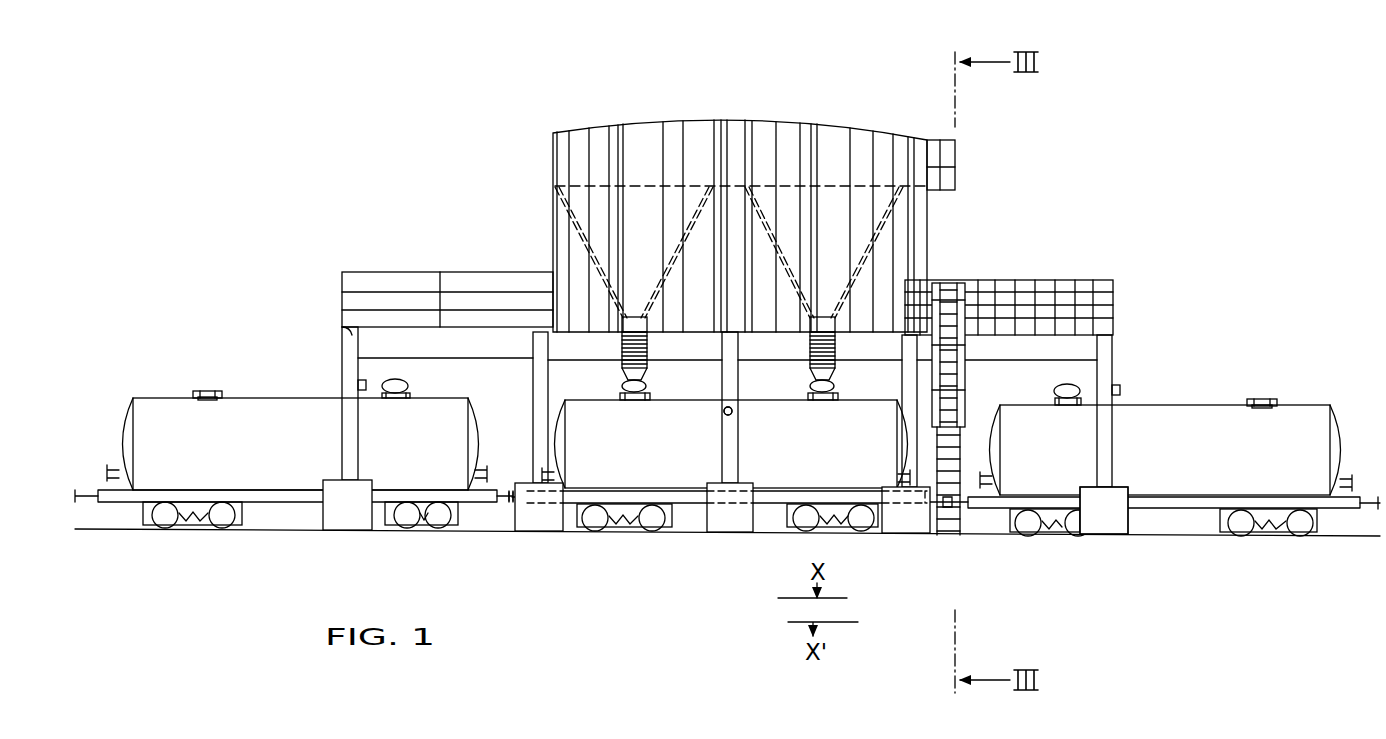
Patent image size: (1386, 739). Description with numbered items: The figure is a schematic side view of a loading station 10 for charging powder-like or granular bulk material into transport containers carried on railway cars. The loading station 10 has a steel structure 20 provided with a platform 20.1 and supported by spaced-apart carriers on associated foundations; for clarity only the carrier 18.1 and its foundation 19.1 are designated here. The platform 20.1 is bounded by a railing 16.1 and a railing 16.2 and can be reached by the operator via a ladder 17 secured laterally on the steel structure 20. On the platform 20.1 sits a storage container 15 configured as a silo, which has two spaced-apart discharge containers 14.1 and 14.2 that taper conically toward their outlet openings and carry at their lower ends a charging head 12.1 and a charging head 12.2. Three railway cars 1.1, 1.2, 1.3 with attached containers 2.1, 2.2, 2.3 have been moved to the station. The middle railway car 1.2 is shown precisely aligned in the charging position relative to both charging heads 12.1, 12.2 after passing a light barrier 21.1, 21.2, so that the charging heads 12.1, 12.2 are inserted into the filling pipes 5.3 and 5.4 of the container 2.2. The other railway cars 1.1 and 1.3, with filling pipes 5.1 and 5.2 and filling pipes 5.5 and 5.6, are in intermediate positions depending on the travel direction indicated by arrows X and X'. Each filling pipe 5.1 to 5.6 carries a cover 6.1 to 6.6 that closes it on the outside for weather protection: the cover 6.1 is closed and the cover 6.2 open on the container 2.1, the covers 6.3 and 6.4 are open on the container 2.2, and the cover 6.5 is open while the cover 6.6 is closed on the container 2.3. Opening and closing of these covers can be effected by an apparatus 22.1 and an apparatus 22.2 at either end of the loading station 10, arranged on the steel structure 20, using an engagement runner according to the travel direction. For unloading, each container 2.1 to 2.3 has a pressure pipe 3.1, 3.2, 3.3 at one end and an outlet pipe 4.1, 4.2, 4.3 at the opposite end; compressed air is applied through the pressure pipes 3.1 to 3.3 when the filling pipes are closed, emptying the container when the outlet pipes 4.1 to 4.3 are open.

The loading station 10 is at (1078, 146).
The storage container 15 is at (787, 122).
The discharge container 14.1 is at (876, 243).
The discharge container 14.2 is at (578, 237).
The charging head 12.1 is at (836, 344).
The charging head 12.2 is at (648, 344).
The railing 16.1 is at (1065, 279).
The railing 16.2 is at (388, 271).
The ladder 17 is at (945, 532).
The carrier 18.1 is at (1104, 352).
The foundation 19.1 is at (1100, 533).
The steel structure 20 is at (338, 337).
The platform 20.1 is at (345, 322).
The apparatus for opening and closing the cover 22.1 is at (1121, 390).
The apparatus for opening and closing the cover 22.2 is at (357, 385).
The light barrier 21.1 is at (723, 412).
The light barrier 21.2 is at (698, 446).
The railway car 1.1 is at (1190, 515).
The railway car 1.2 is at (690, 510).
The railway car 1.3 is at (285, 507).
The container 2.1 is at (1191, 463).
The container 2.2 is at (794, 456).
The container 2.3 is at (297, 451).
The pressure pipe 3.1 is at (1343, 497).
The pressure pipe 3.2 is at (908, 505).
The pressure pipe 3.3 is at (481, 483).
The outlet pipe 4.1 is at (988, 490).
The outlet pipe 4.2 is at (551, 493).
The outlet pipe 4.3 is at (114, 482).
The filling pipe 5.1 is at (1255, 409).
The filling pipe 5.2 is at (1067, 408).
The filling pipe 5.3 is at (822, 402).
The filling pipe 5.4 is at (636, 402).
The filling pipe 5.5 is at (394, 402).
The filling pipe 5.6 is at (208, 402).
The cover 6.1 is at (1262, 399).
The cover 6.2 is at (1054, 390).
The cover 6.3 is at (810, 387).
The cover 6.4 is at (621, 386).
The cover 6.5 is at (410, 383).
The cover 6.6 is at (205, 390).